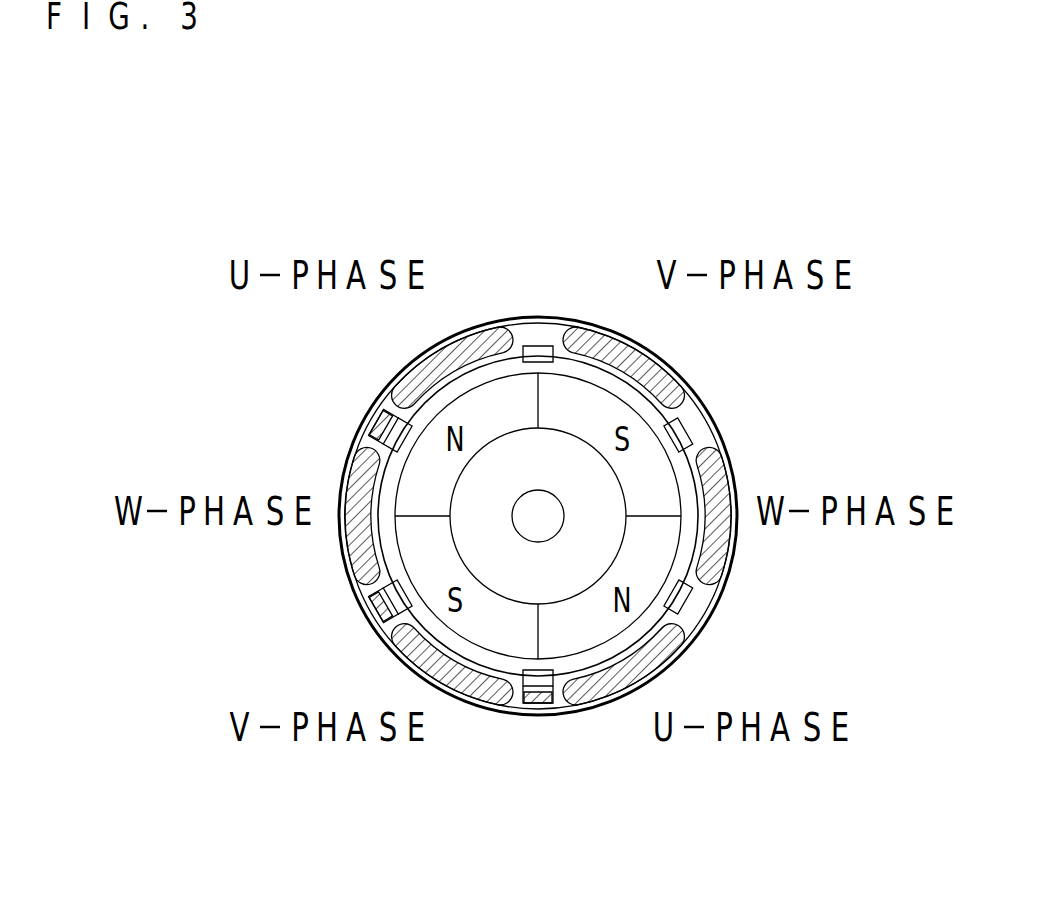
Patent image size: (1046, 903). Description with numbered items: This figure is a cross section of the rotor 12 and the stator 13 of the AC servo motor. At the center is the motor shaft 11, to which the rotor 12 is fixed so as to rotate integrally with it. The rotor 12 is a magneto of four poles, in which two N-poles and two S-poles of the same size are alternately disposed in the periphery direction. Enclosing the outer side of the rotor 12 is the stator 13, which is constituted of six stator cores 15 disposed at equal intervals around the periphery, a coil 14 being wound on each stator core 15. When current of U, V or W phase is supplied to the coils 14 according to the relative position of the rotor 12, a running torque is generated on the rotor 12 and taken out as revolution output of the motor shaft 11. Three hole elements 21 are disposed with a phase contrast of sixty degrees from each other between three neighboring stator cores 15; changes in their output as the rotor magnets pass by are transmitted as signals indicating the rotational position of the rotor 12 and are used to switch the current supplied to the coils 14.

The motor shaft 11 is at (650, 564).
The rotor 12 is at (571, 516).
The stator 13 is at (579, 507).
The coil 14 is at (529, 511).
The stator core 15 is at (538, 468).
The hole element 21 is at (403, 590).